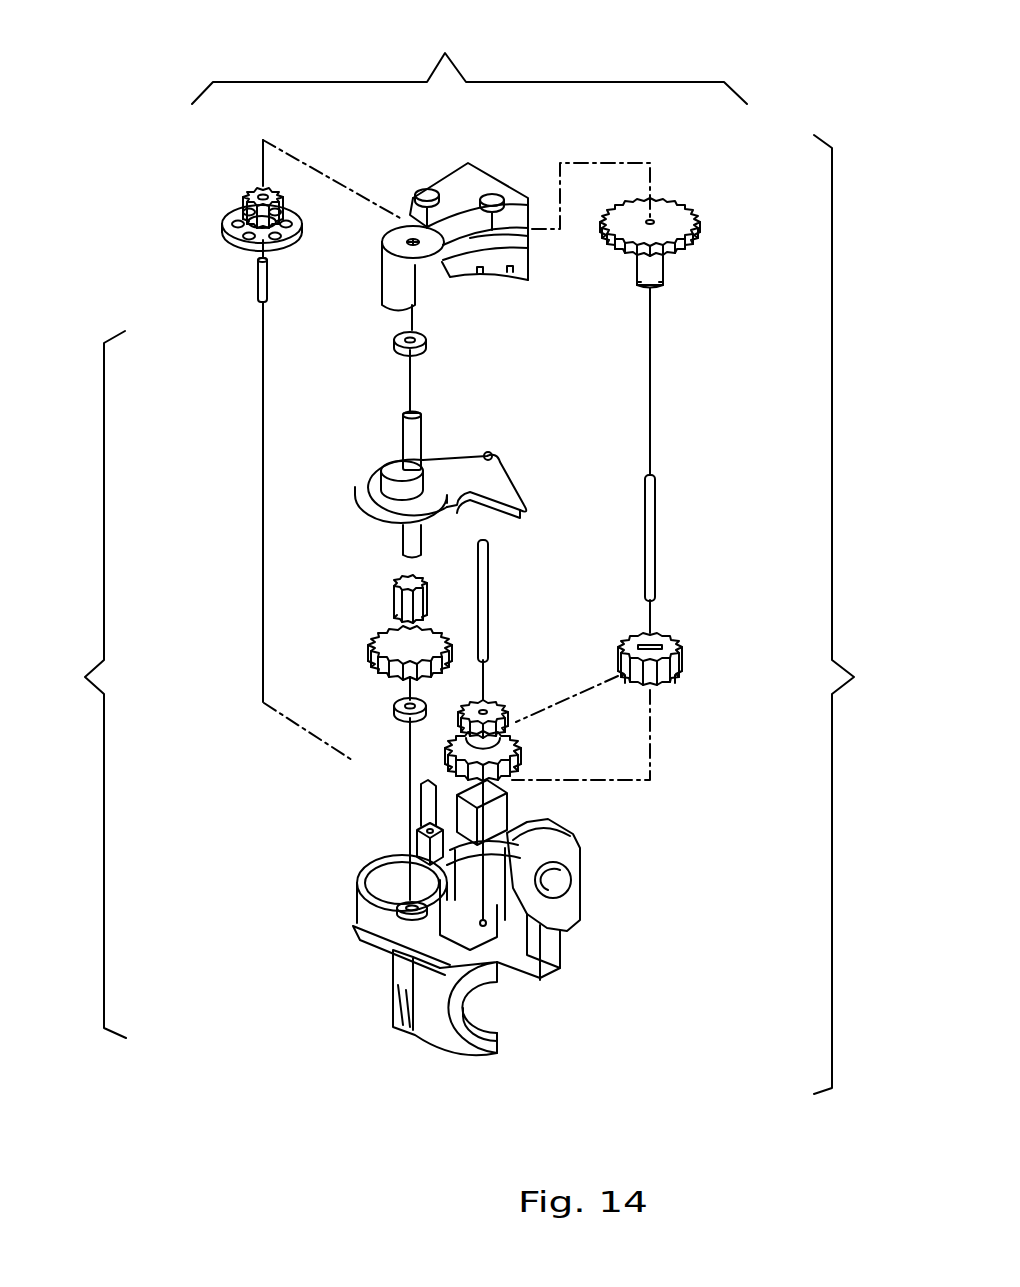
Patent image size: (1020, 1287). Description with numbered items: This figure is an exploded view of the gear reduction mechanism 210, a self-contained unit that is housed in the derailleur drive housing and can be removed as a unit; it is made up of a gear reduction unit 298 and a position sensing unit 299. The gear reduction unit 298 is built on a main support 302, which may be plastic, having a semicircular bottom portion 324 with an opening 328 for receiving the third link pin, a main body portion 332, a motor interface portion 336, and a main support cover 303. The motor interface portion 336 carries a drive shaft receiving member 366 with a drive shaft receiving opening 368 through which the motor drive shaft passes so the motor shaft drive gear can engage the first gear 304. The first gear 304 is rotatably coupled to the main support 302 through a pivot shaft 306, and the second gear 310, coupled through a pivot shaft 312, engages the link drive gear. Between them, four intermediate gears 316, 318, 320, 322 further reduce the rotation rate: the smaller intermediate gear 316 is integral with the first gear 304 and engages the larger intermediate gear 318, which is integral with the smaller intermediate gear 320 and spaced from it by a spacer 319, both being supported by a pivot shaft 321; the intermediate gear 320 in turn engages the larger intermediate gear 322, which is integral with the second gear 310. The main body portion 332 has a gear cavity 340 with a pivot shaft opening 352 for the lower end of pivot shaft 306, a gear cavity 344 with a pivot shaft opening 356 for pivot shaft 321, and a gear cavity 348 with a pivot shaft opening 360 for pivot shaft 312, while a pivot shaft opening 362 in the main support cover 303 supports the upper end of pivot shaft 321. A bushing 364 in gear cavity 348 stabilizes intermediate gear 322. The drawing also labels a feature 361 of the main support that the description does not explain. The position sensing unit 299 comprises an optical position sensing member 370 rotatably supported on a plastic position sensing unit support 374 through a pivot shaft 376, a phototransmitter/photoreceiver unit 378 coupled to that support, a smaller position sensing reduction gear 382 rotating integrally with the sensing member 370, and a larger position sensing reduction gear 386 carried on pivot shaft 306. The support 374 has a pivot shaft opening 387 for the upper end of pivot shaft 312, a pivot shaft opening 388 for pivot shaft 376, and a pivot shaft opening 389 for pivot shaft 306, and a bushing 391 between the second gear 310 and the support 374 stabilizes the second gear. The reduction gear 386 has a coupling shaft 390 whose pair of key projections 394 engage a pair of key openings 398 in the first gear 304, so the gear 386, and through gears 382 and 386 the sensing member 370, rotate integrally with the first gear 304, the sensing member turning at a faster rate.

The position sensing unit 299 is at (469, 61).
The gear reduction unit 298 is at (75, 684).
The gear reduction mechanism 210 is at (872, 614).
The optical position sensing member 370 is at (224, 227).
The position sensing reduction gear 382 is at (260, 192).
The pivot shaft 376 is at (257, 290).
The position sensing unit support 374 is at (446, 223).
The pivot shaft opening 387 is at (390, 243).
The phototransmitter/photoreceiver unit 378 is at (462, 288).
The pivot shaft opening 388 is at (420, 214).
The pivot shaft opening 389 is at (528, 200).
The bushing 391 is at (393, 341).
The pivot shaft 312 is at (403, 444).
The main support cover 303 is at (463, 454).
The pivot shaft opening 362 is at (492, 452).
The pivot shaft 321 is at (492, 563).
The second gear 310 is at (398, 596).
The intermediate gear 322 is at (370, 644).
The bushing 364 is at (393, 709).
The intermediate gear 320 is at (494, 706).
The intermediate gear 318 is at (516, 766).
The spacer 319 is at (516, 730).
The position sensing reduction gear 386 is at (684, 212).
The coupling shaft 390 is at (664, 268).
The key projections 394 is at (636, 286).
The pivot shaft 306 is at (660, 510).
The first gear 304 is at (669, 638).
The key openings 398 is at (634, 643).
The intermediate gear 316 is at (680, 681).
The main support 302 is at (464, 935).
The boss 361 is at (428, 828).
The gear cavity 340 is at (518, 840).
The gear cavity 348 is at (382, 888).
The pivot shaft opening 352 is at (548, 914).
The motor interface portion 336 is at (590, 875).
The drive shaft receiving member 366 is at (572, 886).
The drive shaft receiving opening 368 is at (578, 892).
The pivot shaft opening 360 is at (352, 930).
The main body portion 332 is at (379, 976).
The gear cavity 344 is at (535, 940).
The pivot shaft opening 356 is at (535, 975).
The semicircular bottom portion 324 is at (492, 1022).
The opening 328 is at (480, 1008).